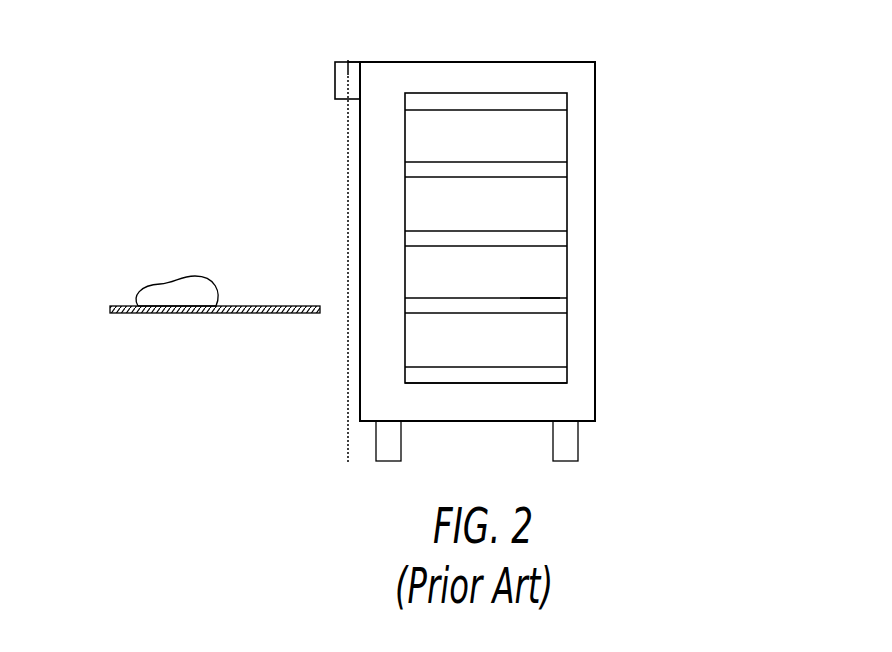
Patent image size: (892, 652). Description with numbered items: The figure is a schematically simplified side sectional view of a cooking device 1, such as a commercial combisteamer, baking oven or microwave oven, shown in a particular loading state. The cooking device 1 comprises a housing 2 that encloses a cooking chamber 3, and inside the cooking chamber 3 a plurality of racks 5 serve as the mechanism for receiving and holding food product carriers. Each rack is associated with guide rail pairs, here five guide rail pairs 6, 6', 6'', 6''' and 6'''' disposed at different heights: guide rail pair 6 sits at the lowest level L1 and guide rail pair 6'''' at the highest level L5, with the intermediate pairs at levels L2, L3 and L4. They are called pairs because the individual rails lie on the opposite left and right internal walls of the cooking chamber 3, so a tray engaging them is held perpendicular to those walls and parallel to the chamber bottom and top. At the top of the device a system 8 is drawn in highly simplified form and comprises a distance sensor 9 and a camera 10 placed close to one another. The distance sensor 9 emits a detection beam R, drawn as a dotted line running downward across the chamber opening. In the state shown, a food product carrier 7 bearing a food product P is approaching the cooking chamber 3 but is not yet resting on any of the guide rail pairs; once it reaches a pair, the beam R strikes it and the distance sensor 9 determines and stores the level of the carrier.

The cooking device 1 is at (541, 261).
The housing 2 is at (595, 213).
The cooking chamber 3 is at (487, 217).
The rack 5 is at (545, 299).
The guide rail pair 6 is at (537, 375).
The guide rail pair 6' is at (540, 307).
The guide rail pair 6'' is at (543, 239).
The guide rail pair 6''' is at (546, 167).
The guide rail pair 6'''' is at (549, 94).
The food product carrier 7 is at (256, 318).
The system 8 is at (343, 52).
The distance sensor 9 is at (352, 61).
The camera 10 is at (340, 88).
The food product P is at (143, 296).
The detection beam R is at (347, 173).
The lowest level L1 is at (386, 381).
The level L2 is at (386, 311).
The level L3 is at (386, 245).
The level L4 is at (386, 176).
The highest level L5 is at (386, 107).